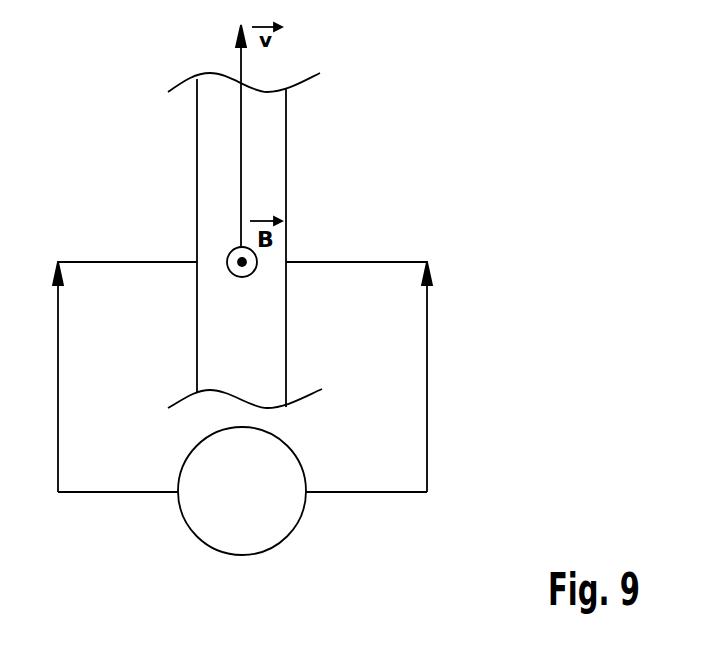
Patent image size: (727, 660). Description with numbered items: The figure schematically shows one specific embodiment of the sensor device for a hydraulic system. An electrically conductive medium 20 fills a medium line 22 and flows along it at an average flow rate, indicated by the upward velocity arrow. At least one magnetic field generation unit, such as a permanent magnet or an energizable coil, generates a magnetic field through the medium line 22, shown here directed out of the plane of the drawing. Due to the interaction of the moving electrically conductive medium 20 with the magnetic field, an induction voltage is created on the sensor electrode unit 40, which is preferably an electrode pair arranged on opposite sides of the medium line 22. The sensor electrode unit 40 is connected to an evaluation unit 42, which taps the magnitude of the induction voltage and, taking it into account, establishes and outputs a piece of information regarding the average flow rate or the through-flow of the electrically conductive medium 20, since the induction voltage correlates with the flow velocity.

The electrically conductive medium 20 is at (265, 146).
The medium line 22 is at (218, 145).
The sensor electrode unit 40 is at (386, 262).
The evaluation unit 42 is at (293, 530).